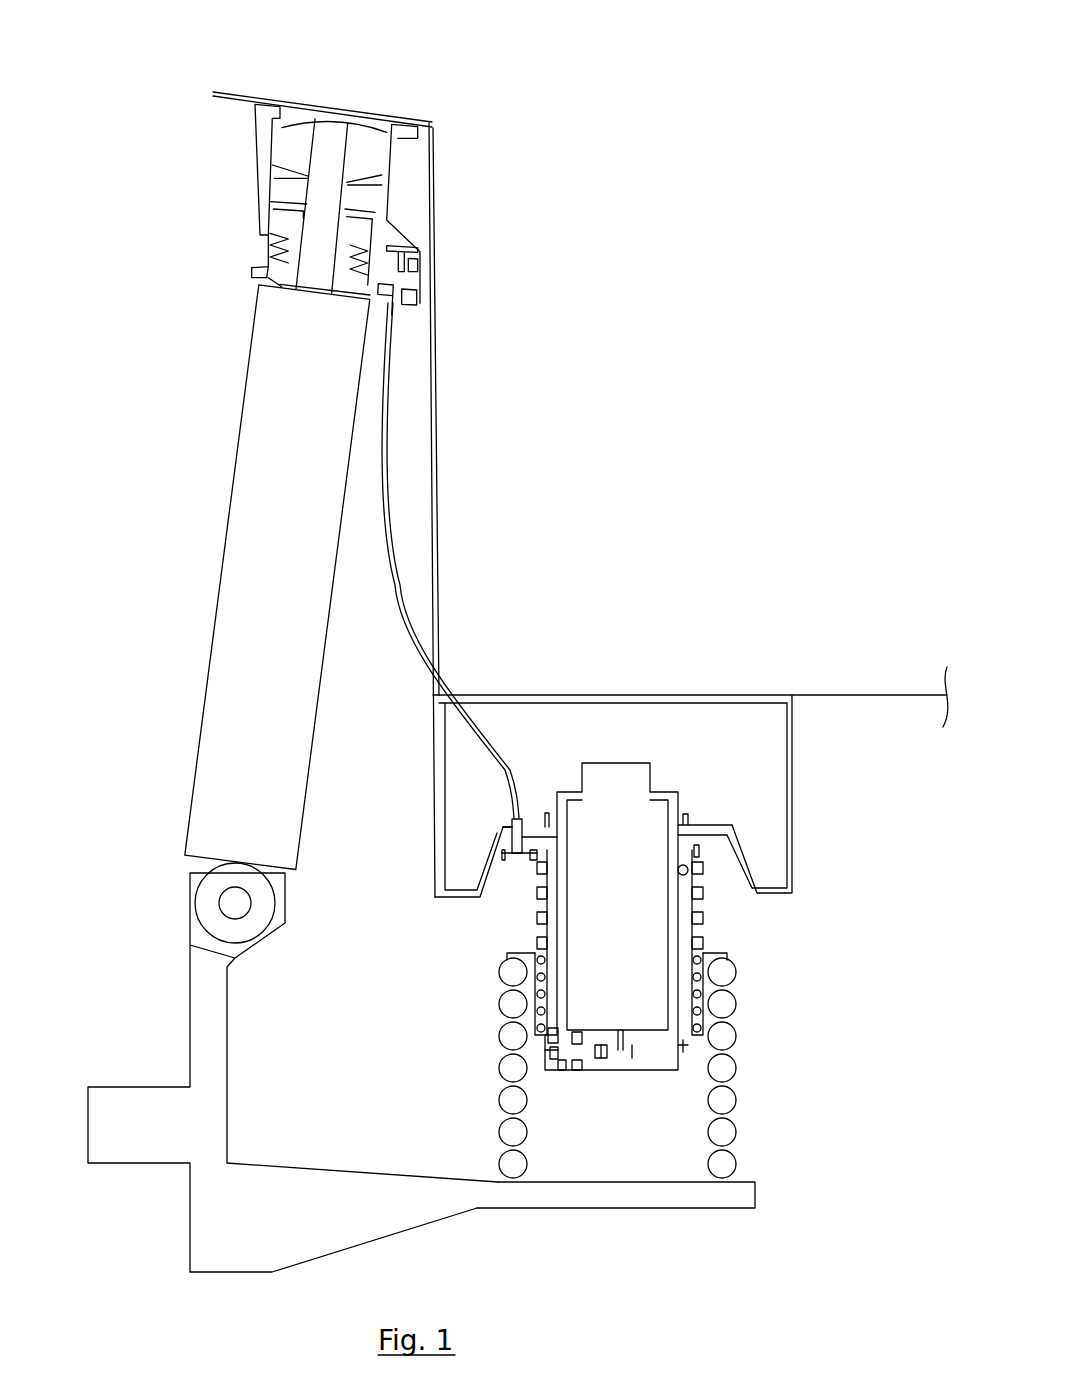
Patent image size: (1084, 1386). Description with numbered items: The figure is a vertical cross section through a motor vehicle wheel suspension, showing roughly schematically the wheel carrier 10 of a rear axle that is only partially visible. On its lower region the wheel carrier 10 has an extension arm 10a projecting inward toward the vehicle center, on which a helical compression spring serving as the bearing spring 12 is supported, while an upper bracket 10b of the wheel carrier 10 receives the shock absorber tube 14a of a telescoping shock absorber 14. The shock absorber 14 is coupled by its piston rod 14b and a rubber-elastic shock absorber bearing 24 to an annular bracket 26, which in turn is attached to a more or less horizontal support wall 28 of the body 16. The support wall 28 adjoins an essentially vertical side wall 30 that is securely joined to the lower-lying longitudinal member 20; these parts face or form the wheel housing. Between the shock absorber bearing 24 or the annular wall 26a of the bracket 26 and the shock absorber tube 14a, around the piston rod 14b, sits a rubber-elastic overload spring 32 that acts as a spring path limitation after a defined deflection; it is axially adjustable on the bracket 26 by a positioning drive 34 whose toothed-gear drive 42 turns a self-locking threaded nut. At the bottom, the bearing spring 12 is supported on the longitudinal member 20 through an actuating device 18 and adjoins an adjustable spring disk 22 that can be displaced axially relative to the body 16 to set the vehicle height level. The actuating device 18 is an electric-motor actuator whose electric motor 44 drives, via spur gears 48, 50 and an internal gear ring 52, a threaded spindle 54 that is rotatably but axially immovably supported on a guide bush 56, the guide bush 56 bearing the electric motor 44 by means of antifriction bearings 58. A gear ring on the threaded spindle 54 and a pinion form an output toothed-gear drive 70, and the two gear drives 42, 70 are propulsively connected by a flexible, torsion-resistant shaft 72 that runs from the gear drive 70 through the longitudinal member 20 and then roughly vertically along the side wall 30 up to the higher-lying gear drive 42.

The wheel carrier 10 is at (170, 1190).
The extension arm 10a is at (580, 1210).
The upper bracket 10b is at (200, 933).
The bearing spring 12 is at (502, 1102).
The telescoping shock absorber 14 is at (298, 438).
The shock absorber tube 14a is at (304, 569).
The piston rod 14b is at (355, 142).
The body 16 is at (465, 608).
The actuating device 18 is at (642, 956).
The longitudinal member 20 is at (792, 765).
The adjustable spring disk 22 is at (735, 955).
The shock absorber bearing 24 is at (299, 142).
The annular bracket 26 is at (267, 163).
The annular wall 26a is at (288, 178).
The support wall 28 is at (333, 96).
The side wall 30 is at (437, 403).
The overload spring 32 is at (357, 232).
The positioning drive 34 is at (263, 242).
The toothed-gear drive 42 is at (407, 232).
The electric motor 44 is at (633, 945).
The spur gear 48 is at (635, 1057).
The spur gear 50 is at (588, 1060).
The internal gear ring 52 is at (688, 1053).
The threaded spindle 54 is at (540, 915).
The guide bush 56 is at (673, 888).
The antifriction bearing 58 is at (548, 867).
The output toothed-gear drive 70 is at (510, 845).
The flexible shaft 72 is at (396, 572).